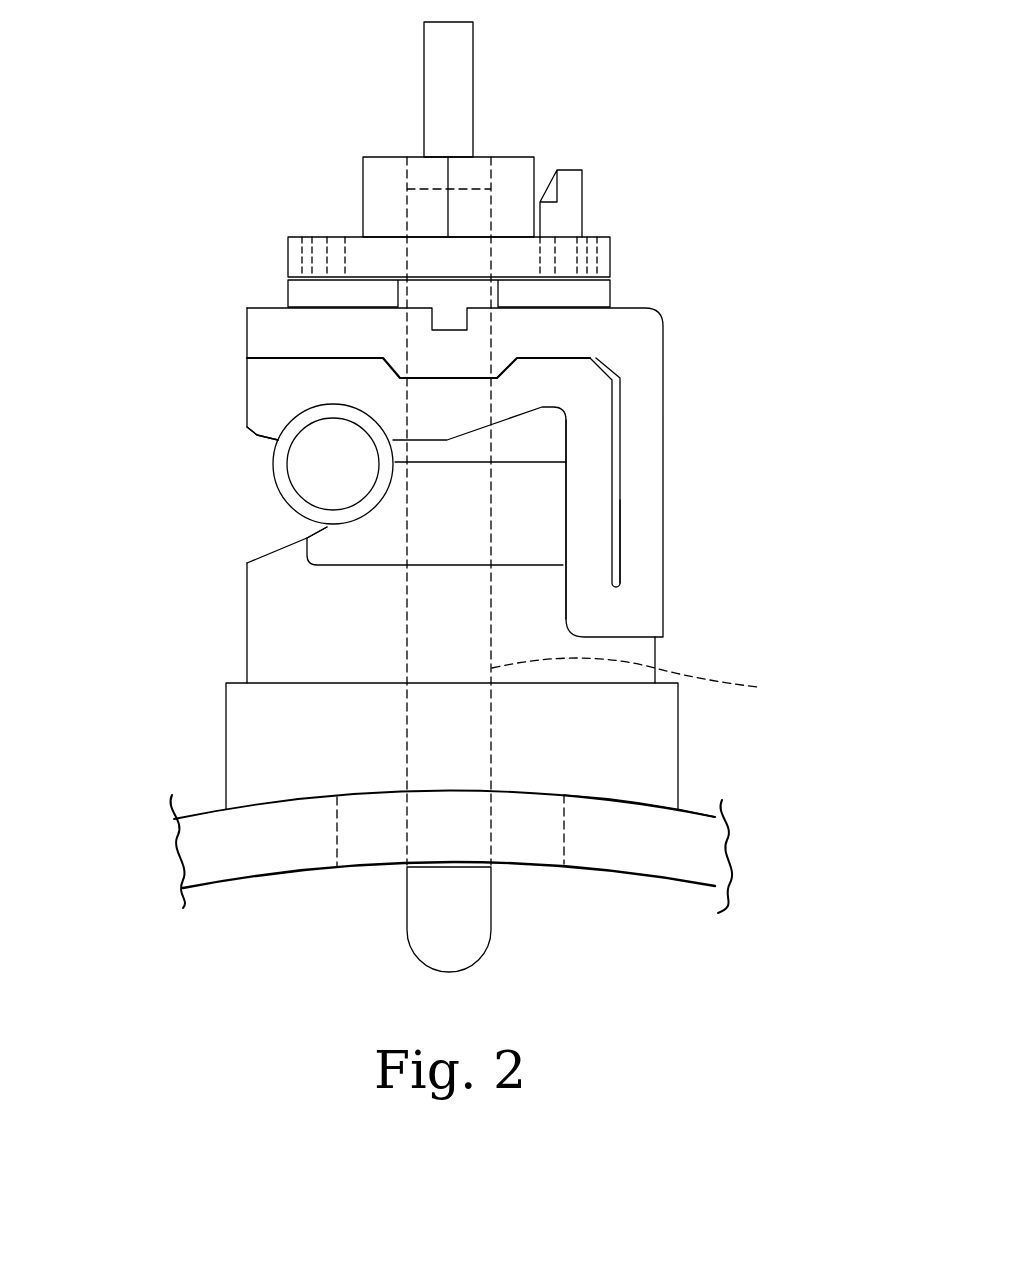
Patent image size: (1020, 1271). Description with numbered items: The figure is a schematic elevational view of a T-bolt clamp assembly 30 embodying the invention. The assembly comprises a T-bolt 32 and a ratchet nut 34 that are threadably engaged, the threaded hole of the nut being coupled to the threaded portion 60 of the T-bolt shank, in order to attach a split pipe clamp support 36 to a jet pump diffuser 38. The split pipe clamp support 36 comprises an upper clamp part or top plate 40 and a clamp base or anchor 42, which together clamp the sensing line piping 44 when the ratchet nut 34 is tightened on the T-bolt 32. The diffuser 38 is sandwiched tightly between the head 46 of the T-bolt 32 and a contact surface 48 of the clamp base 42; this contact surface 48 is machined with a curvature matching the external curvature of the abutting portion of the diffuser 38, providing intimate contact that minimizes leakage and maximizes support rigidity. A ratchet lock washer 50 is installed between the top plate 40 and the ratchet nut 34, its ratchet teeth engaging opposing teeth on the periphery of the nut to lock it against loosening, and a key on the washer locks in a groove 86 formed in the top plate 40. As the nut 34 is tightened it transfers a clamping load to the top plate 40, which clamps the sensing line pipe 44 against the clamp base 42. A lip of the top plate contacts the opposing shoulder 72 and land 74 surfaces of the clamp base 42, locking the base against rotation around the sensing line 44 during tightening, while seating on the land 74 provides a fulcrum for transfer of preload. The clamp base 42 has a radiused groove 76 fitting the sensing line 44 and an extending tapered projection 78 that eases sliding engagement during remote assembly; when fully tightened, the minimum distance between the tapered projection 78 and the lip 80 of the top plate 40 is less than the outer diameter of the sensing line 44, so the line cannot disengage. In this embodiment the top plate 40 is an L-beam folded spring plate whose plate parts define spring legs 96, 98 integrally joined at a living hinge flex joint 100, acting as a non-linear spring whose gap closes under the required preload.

The T-bolt clamp assembly 30 is at (678, 182).
The T-bolt 32 is at (457, 73).
The ratchet nut 34 is at (371, 172).
The split pipe clamp support 36 is at (160, 475).
The jet pump diffuser 38 is at (220, 871).
The top plate 40 is at (716, 378).
The clamp base 42 is at (240, 657).
The sensing line piping 44 is at (274, 484).
The head 46 is at (482, 937).
The contact surface 48 is at (648, 811).
The ratchet lock washer 50 is at (262, 270).
The threaded portion 60 is at (643, 678).
The shoulder 72 is at (567, 563).
The land 74 is at (633, 637).
The radiused groove 76 is at (338, 514).
The tapered projection 78 is at (272, 553).
The lip 80 is at (258, 428).
The groove 86 is at (472, 310).
The spring leg 96 is at (587, 492).
The spring leg 98 is at (645, 510).
The living hinge flex joint 100 is at (618, 601).